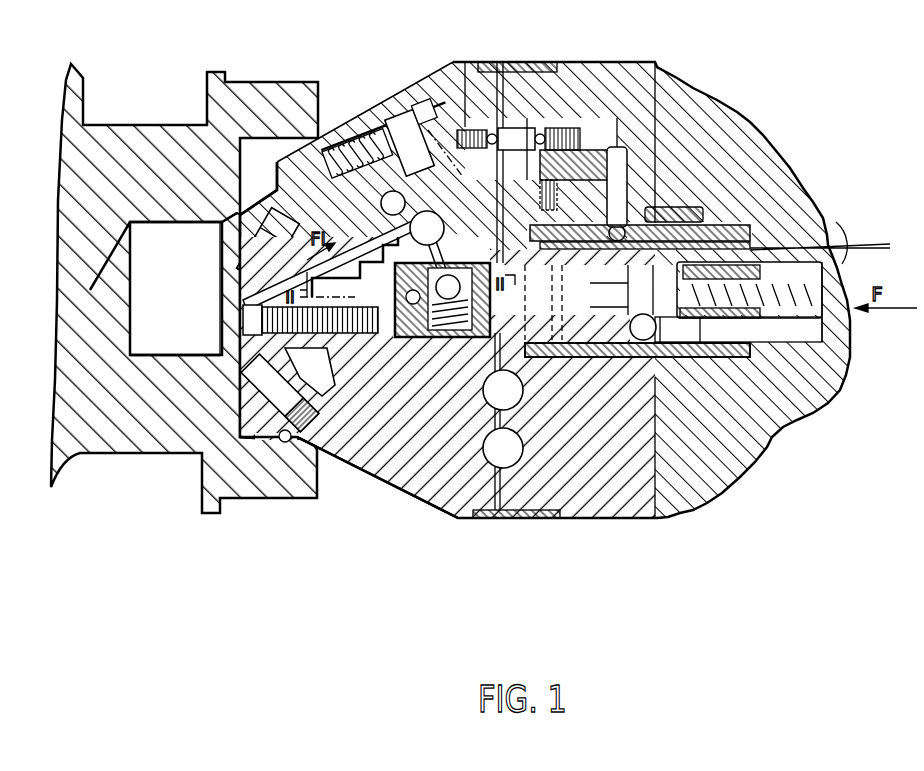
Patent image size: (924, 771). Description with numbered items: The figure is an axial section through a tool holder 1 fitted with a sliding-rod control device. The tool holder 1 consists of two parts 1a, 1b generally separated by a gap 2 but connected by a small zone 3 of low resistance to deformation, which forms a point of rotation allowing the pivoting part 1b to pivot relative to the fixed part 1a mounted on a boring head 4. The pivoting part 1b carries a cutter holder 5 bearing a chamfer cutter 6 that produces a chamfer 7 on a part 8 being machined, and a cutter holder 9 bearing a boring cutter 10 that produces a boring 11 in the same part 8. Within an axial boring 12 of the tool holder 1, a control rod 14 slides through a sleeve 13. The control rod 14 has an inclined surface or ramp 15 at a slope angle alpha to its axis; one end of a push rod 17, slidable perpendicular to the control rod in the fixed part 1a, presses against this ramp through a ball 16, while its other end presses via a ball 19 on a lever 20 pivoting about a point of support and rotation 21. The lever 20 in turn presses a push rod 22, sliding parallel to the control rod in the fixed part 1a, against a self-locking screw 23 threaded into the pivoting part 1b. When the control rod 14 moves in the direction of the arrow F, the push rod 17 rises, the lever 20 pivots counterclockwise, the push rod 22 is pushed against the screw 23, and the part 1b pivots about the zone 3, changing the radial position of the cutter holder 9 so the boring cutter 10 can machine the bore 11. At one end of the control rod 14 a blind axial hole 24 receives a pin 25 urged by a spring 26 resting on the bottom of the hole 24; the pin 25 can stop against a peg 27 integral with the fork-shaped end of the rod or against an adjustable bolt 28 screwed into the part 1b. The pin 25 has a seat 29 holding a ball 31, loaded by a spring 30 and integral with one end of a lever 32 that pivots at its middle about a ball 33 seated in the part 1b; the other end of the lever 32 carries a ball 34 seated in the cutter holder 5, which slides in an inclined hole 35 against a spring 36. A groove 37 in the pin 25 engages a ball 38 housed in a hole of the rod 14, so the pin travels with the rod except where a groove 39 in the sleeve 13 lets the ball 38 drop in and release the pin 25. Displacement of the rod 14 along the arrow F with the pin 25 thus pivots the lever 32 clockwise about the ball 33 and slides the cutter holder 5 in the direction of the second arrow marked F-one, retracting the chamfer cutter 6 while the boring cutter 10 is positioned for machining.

The tool holder 1 is at (655, 556).
The fixed part of tool holder 1a is at (655, 470).
The pivoting part of tool holder 1b is at (387, 468).
The gap 2 is at (480, 77).
The zone of low resistance to deformation 3 is at (498, 418).
The boring head 4 is at (773, 452).
The cutter holder 5 is at (285, 217).
The chamfer cutter 6 is at (233, 242).
The chamfer 7 is at (237, 213).
The part being machined 8 is at (140, 126).
The cutter holder 9 is at (313, 397).
The boring cutter 10 is at (253, 407).
The boring 11 is at (285, 437).
The axial boring 12 is at (728, 225).
The sleeve 13 is at (727, 227).
The control rod 14 is at (838, 330).
The inclined surface or ramp 15 is at (750, 247).
The ball 16 is at (660, 207).
The push rod 17 is at (657, 183).
The ball 19 is at (655, 160).
The lever 20 is at (593, 148).
The point of support and rotation 21 is at (563, 127).
The push rod 22 is at (520, 130).
The self-locking screw 23 is at (452, 115).
The blind axial hole 24 is at (735, 345).
The pin 25 is at (681, 375).
The spring 26 is at (800, 312).
The peg 27 is at (393, 343).
The bolt 28 is at (260, 318).
The seat 29 is at (473, 340).
The spring 30 is at (440, 320).
The ball 31 is at (500, 245).
The lever 32 is at (452, 275).
The ball 33 is at (433, 220).
The ball 34 is at (381, 204).
The inclined hole 35 is at (425, 112).
The spring 36 is at (357, 150).
The groove 37 is at (620, 278).
The ball 38 is at (620, 307).
The groove 39 is at (580, 350).
The slope angle alpha is at (848, 242).